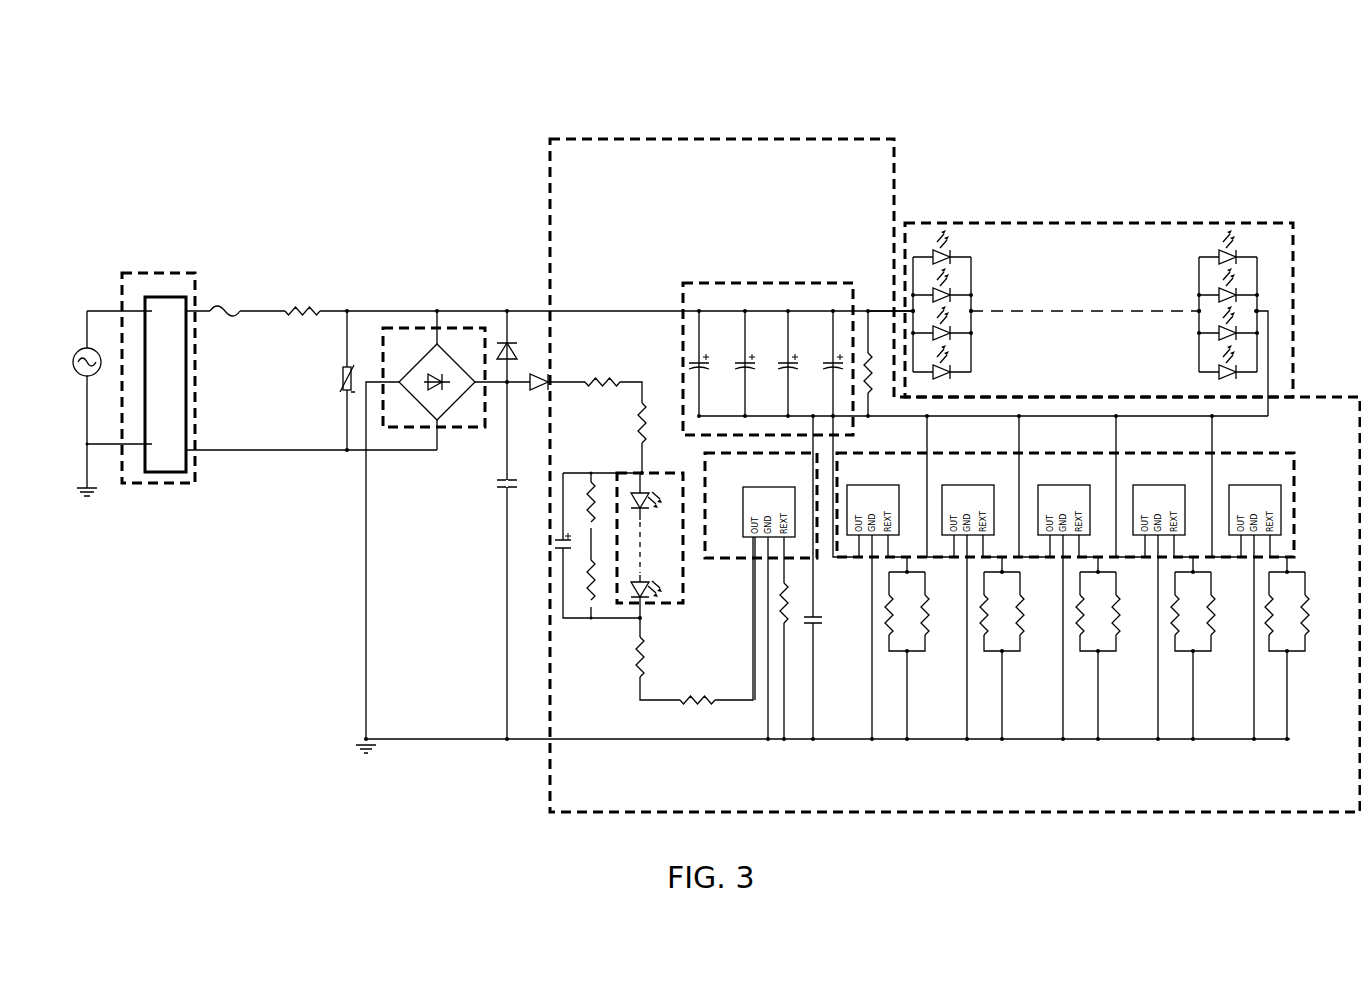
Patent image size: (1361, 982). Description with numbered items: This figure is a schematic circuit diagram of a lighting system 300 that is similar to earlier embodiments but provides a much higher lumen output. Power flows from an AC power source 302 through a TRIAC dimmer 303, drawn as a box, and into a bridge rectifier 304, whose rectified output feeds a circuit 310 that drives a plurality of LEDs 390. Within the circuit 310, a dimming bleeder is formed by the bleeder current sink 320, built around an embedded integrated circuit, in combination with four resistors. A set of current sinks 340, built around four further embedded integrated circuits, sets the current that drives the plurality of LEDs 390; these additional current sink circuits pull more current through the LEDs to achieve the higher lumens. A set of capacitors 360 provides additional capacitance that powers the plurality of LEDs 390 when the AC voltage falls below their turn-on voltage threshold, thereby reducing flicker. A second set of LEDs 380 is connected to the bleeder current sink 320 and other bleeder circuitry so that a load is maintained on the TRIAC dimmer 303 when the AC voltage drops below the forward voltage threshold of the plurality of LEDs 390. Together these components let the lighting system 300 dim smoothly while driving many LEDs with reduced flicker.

The lighting system 300 is at (436, 96).
The AC power source 302 is at (85, 347).
The TRIAC dimmer 303 is at (165, 273).
The bridge rectifier 304 is at (476, 328).
The circuit 310 is at (672, 137).
The bleeder current sink 320 is at (703, 470).
The set of current sinks 340 is at (1210, 452).
The set of capacitors 360 is at (797, 282).
The second set of LEDs 380 is at (625, 604).
The plurality of LEDs 390 is at (1097, 222).